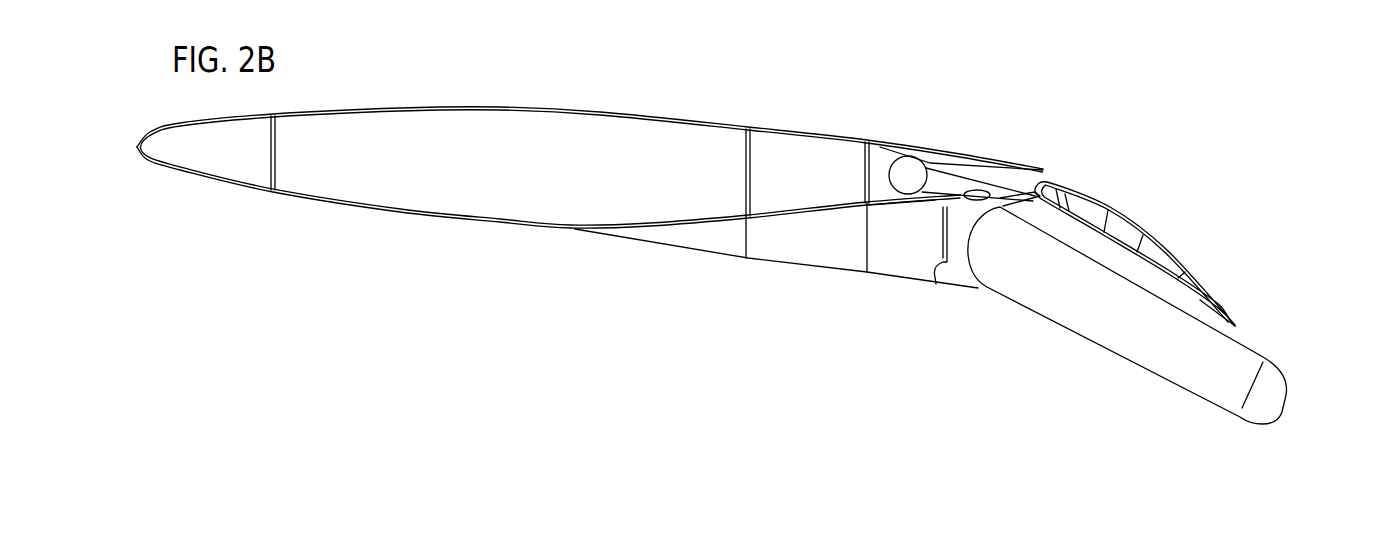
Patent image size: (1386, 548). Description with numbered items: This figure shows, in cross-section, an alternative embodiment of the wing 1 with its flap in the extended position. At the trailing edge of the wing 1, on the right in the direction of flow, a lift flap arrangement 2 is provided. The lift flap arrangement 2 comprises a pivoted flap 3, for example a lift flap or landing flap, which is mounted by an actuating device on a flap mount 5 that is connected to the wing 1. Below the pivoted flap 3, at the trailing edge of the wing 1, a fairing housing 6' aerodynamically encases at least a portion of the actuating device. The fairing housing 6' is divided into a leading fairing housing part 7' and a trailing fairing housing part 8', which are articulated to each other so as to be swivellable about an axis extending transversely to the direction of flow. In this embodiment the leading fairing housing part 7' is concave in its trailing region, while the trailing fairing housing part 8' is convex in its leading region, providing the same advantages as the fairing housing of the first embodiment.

The wing 1 is at (441, 96).
The lift flap arrangement 2 is at (1080, 158).
The pivoted flap 3 is at (1135, 215).
The flap mount 5 is at (806, 284).
The fairing housing 6' is at (1152, 315).
The leading fairing housing part 7' is at (954, 275).
The trailing fairing housing part 8' is at (1169, 355).